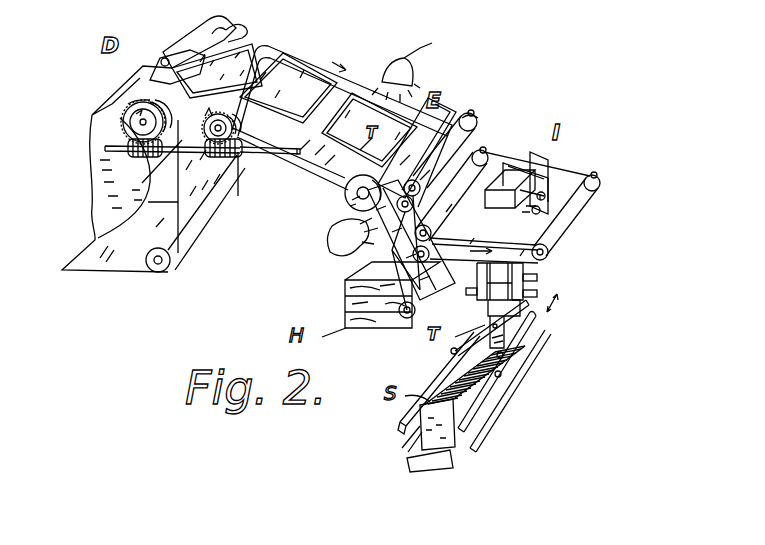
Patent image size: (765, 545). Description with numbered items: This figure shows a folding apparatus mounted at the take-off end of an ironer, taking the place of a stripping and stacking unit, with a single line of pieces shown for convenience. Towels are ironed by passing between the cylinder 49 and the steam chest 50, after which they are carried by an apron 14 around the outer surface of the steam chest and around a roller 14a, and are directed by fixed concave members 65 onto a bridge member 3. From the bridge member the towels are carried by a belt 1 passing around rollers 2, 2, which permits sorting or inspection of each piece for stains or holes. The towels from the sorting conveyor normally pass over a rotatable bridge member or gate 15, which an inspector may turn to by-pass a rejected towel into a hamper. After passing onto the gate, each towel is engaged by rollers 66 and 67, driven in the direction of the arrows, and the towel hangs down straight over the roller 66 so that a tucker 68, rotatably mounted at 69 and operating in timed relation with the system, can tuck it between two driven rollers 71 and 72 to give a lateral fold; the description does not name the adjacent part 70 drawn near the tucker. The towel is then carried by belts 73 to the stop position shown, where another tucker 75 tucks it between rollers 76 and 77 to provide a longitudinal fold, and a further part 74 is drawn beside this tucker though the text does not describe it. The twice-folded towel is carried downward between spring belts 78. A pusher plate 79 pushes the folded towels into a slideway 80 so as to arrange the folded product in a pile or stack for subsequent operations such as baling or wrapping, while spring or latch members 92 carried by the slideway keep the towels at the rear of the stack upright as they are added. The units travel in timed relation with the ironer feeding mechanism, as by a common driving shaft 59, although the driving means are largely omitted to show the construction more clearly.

The belt 1 is at (302, 172).
The rollers 2 is at (240, 130).
The bridge member 3 is at (270, 48).
The apron 14 is at (232, 178).
The roller 14a is at (144, 70).
The rotatable bridge member or gate 15 is at (455, 118).
The cylinder 49 is at (92, 162).
The steam chest 50 is at (92, 218).
The driving shaft 59 is at (280, 156).
The fixed concave members 65 is at (212, 32).
The roller 66 is at (466, 144).
The roller 67 is at (474, 127).
The tucker 68 is at (345, 300).
The pivot mounting 69 is at (406, 316).
The inclined plank 70 is at (362, 263).
The driven roller 71 is at (487, 180).
The driven roller 72 is at (497, 180).
The belts 73 is at (572, 222).
The guide roller 74 is at (540, 192).
The tucker 75 is at (548, 176).
The roller 76 is at (544, 205).
The roller 77 is at (510, 207).
The spring belts 78 is at (540, 276).
The pusher plate 79 is at (533, 328).
The slideway 80 is at (506, 352).
The spring or latch members 92 is at (452, 352).